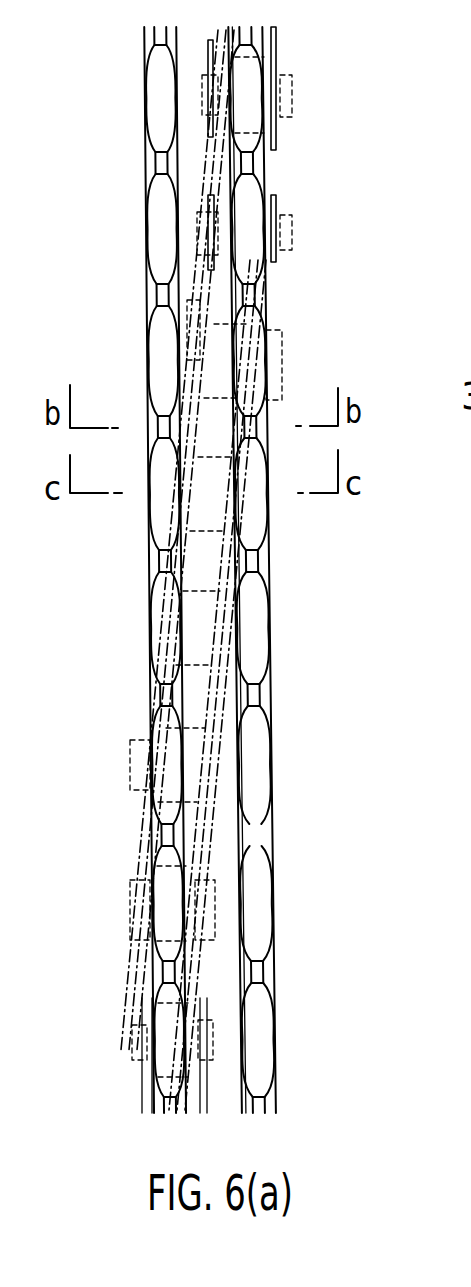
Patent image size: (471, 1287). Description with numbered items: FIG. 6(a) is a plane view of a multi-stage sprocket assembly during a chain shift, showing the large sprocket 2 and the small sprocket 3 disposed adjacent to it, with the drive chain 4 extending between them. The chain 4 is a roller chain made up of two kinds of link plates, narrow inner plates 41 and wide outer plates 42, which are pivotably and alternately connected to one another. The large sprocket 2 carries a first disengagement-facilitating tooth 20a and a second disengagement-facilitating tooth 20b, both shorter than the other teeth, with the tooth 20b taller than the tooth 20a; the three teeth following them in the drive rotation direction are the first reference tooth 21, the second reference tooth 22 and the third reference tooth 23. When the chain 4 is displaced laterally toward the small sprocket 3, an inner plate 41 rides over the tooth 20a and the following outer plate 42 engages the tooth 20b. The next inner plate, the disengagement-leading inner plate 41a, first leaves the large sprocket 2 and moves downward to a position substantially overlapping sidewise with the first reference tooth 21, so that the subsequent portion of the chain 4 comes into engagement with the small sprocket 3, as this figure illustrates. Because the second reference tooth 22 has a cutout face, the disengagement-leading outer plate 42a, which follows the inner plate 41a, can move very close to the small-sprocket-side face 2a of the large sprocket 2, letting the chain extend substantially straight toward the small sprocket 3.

The large sprocket 2 is at (272, 570).
The small-sprocket-side face 2a is at (236, 968).
The small sprocket 3 is at (147, 131).
The drive chain 4 is at (130, 1047).
The first disengagement-facilitating tooth 20a is at (263, 166).
The second disengagement-facilitating tooth 20b is at (266, 296).
The first reference tooth 21 is at (266, 420).
The second reference tooth 22 is at (268, 560).
The third reference tooth 23 is at (268, 700).
The inner plate 41 is at (140, 955).
The disengagement-leading inner plate 41a is at (190, 413).
The outer plate 42 is at (142, 800).
The disengagement-leading outer plate 42a is at (222, 664).